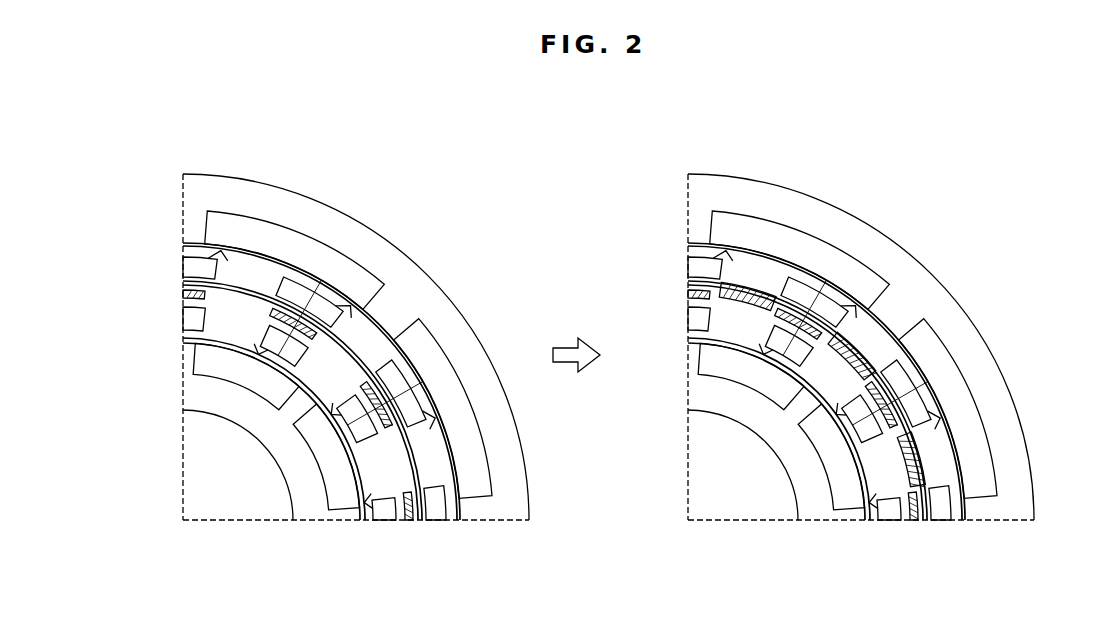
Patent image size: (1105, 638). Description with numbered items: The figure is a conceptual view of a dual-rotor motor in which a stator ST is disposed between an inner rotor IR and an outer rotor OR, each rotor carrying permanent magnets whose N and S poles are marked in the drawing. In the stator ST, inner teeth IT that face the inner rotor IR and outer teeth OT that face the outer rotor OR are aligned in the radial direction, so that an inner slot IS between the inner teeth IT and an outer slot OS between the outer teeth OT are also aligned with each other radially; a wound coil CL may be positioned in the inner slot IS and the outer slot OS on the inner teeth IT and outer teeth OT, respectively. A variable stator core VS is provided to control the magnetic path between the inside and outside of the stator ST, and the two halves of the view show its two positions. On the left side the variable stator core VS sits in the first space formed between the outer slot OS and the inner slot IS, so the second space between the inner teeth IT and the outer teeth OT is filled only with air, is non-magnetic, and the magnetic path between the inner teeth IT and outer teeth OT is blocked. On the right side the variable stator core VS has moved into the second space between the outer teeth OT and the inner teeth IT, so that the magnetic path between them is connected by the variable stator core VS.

The outer rotor OR is at (178, 176).
The stator ST is at (178, 258).
The inner rotor IR is at (178, 340).
The outer teeth OT is at (246, 258).
The inner teeth IT is at (244, 327).
The outer slot OS is at (302, 283).
The inner slot IS is at (272, 358).
The variable stator core VS is at (385, 387).
The wound coil CL is at (316, 279).